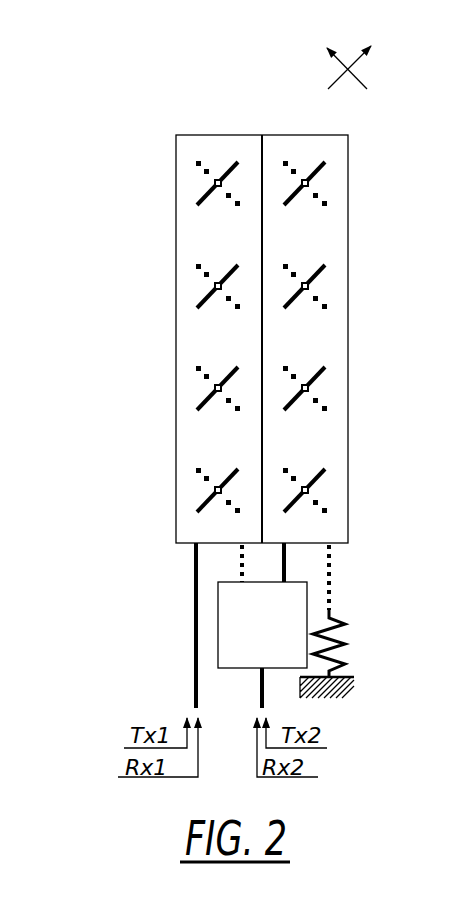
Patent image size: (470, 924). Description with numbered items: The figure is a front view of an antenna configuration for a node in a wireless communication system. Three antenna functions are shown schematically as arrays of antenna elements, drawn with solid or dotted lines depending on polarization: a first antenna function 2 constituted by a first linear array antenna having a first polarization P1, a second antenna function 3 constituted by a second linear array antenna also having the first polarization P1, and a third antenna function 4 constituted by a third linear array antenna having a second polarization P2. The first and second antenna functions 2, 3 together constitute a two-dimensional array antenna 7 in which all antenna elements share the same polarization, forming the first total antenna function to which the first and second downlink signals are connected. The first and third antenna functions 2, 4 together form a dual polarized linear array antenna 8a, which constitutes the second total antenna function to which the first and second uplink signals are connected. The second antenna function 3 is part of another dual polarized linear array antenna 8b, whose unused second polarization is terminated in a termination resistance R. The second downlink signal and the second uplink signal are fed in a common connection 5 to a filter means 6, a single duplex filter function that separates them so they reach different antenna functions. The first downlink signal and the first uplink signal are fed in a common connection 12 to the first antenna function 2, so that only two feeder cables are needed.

The first antenna function 2 is at (234, 163).
The second antenna function 3 is at (318, 172).
The third antenna function 4 is at (207, 172).
The common connection 5 is at (265, 695).
The filter means 6 is at (277, 643).
The two-dimensional array antenna 7 is at (347, 130).
The dual polarized linear array antenna 8a is at (214, 553).
The another dual polarized linear array antenna 8b is at (298, 553).
The common connection 12 is at (194, 621).
The termination resistance R is at (346, 640).
The first polarization P1 is at (416, 63).
The second polarization P2 is at (351, 63).